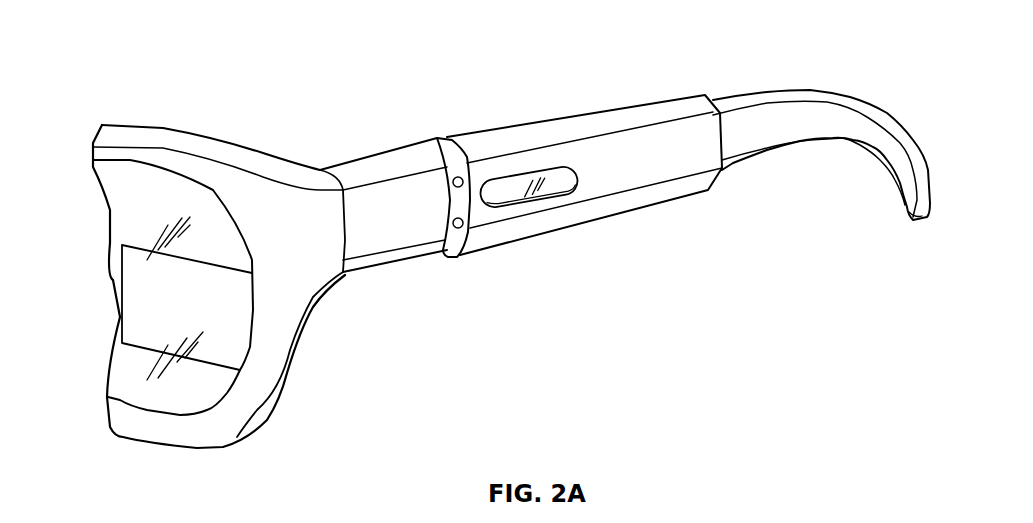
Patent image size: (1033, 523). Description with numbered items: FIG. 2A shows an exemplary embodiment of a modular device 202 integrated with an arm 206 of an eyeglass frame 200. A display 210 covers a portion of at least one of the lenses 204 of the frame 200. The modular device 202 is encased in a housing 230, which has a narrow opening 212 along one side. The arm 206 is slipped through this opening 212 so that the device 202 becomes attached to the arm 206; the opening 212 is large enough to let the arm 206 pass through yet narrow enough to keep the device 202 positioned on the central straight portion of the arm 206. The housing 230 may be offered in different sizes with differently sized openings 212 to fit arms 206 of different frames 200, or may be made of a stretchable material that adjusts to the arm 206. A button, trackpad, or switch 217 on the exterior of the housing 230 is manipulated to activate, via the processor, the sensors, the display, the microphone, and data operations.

The frame 200 is at (183, 66).
The modular device 202 is at (580, 114).
The lenses 204 is at (125, 208).
The arm 206 is at (907, 130).
The display 210 is at (142, 307).
The opening 212 is at (437, 148).
The button, trackpad, or switch 217 is at (537, 200).
The housing 230 is at (663, 155).